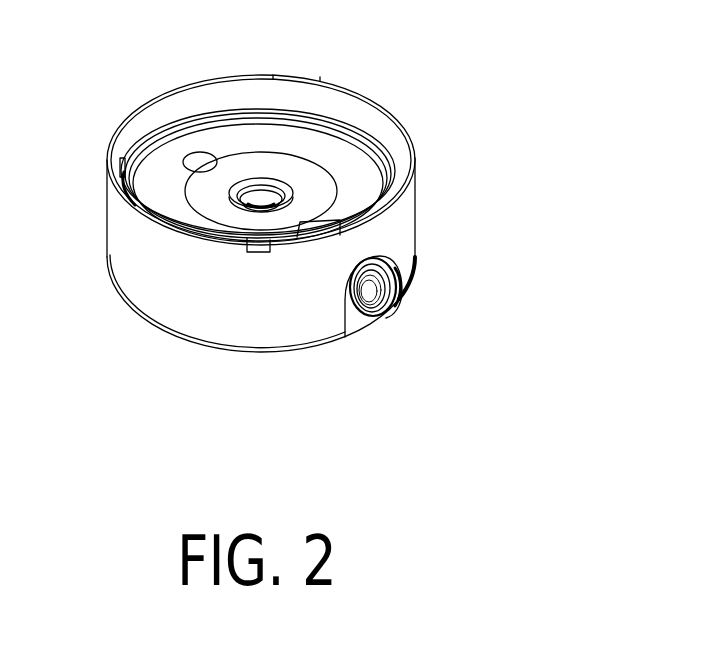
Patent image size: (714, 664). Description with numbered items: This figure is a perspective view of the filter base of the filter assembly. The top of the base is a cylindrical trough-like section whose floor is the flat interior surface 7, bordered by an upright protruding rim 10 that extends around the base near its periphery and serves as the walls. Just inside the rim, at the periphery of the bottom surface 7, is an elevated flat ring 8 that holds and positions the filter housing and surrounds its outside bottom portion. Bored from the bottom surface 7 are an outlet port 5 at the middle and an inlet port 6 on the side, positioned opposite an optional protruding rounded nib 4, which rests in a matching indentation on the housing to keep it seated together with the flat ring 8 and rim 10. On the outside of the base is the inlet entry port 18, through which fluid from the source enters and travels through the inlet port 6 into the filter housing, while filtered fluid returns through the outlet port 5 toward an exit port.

The protruding rounded nib 4 is at (197, 158).
The outlet port 5 is at (283, 208).
The inlet port 6 is at (296, 218).
The flat interior surface 7 is at (347, 162).
The elevated flat ring 8 is at (227, 110).
The upright protruding rim 10 is at (343, 112).
The inlet entry port 18 is at (371, 296).